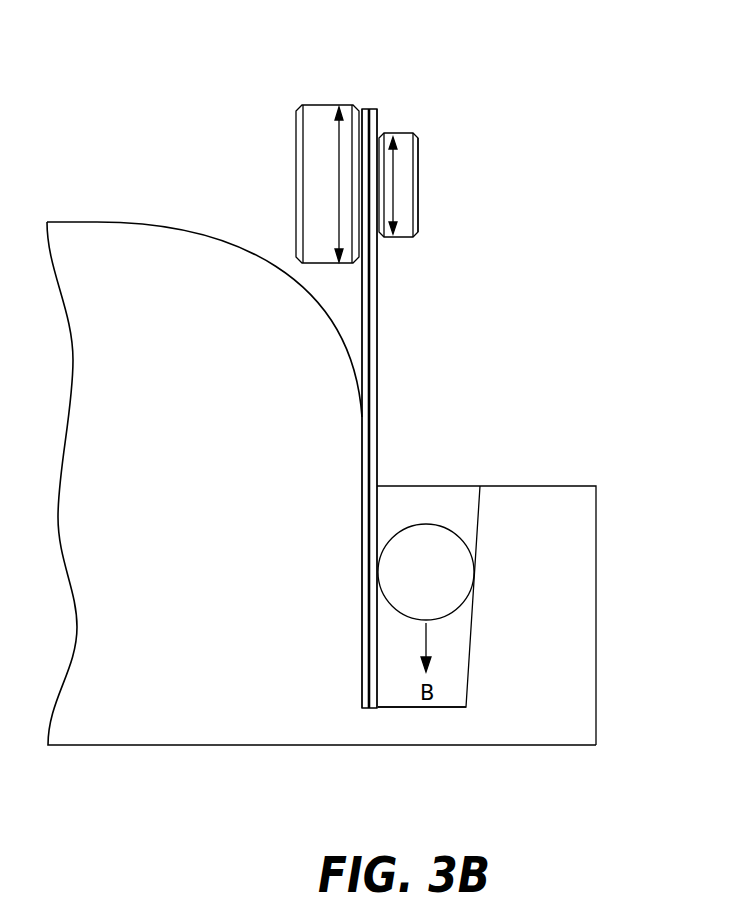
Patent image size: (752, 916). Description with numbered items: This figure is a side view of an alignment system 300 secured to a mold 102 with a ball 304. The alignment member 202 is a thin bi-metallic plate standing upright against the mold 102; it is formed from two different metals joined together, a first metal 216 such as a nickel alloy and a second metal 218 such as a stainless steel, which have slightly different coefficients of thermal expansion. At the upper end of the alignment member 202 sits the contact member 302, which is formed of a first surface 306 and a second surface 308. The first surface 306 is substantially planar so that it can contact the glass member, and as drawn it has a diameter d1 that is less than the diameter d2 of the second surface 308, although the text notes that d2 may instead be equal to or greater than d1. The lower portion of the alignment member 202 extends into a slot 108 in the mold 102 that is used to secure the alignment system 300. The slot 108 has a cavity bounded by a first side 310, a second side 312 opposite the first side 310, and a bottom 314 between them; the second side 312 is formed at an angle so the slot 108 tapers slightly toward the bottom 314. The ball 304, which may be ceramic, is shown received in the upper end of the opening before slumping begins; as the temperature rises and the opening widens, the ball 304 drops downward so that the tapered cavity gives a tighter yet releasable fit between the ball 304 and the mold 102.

The mold 102 is at (240, 553).
The slot 108 is at (422, 503).
The alignment member 202 is at (377, 268).
The first metal 216 is at (362, 328).
The second metal 218 is at (377, 365).
The alignment system 300 is at (382, 93).
The contact member 302 is at (417, 196).
The ball 304 is at (447, 584).
The first surface 306 is at (315, 105).
The second surface 308 is at (403, 133).
The first side 310 is at (362, 620).
The second side 312 is at (472, 605).
The bottom 314 is at (413, 708).
The diameter of first surface d1 is at (325, 184).
The diameter of second surface d2 is at (392, 171).